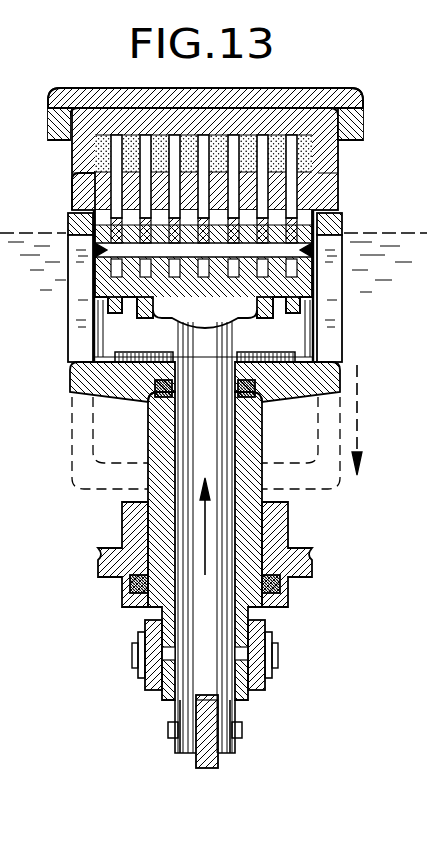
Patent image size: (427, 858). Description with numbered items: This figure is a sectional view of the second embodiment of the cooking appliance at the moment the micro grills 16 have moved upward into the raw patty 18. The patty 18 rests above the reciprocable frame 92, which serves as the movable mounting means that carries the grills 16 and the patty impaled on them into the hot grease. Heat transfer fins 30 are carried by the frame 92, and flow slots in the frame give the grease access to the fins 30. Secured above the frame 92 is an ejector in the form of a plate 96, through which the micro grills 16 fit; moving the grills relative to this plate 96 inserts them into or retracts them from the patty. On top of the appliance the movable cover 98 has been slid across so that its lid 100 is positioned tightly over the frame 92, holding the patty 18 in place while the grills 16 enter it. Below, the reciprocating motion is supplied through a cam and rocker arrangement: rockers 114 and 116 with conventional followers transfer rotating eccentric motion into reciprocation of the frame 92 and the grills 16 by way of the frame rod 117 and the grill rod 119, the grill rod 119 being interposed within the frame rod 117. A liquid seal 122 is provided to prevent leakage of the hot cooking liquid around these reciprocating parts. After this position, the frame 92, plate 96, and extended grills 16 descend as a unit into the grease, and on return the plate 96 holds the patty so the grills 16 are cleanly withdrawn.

The raw patty 18 is at (127, 135).
The movable cover 98 is at (360, 115).
The lid 100 is at (330, 118).
The ejector plate 96 is at (83, 192).
The micro grills 16 is at (290, 190).
The heat transfer fins 30 is at (110, 308).
The reciprocable frame 92 is at (80, 375).
The liquid seal 122 is at (158, 396).
The frame rod 117 is at (150, 470).
The grill rod 119 is at (222, 522).
The rocker 114 is at (263, 682).
The rocker 116 is at (218, 772).